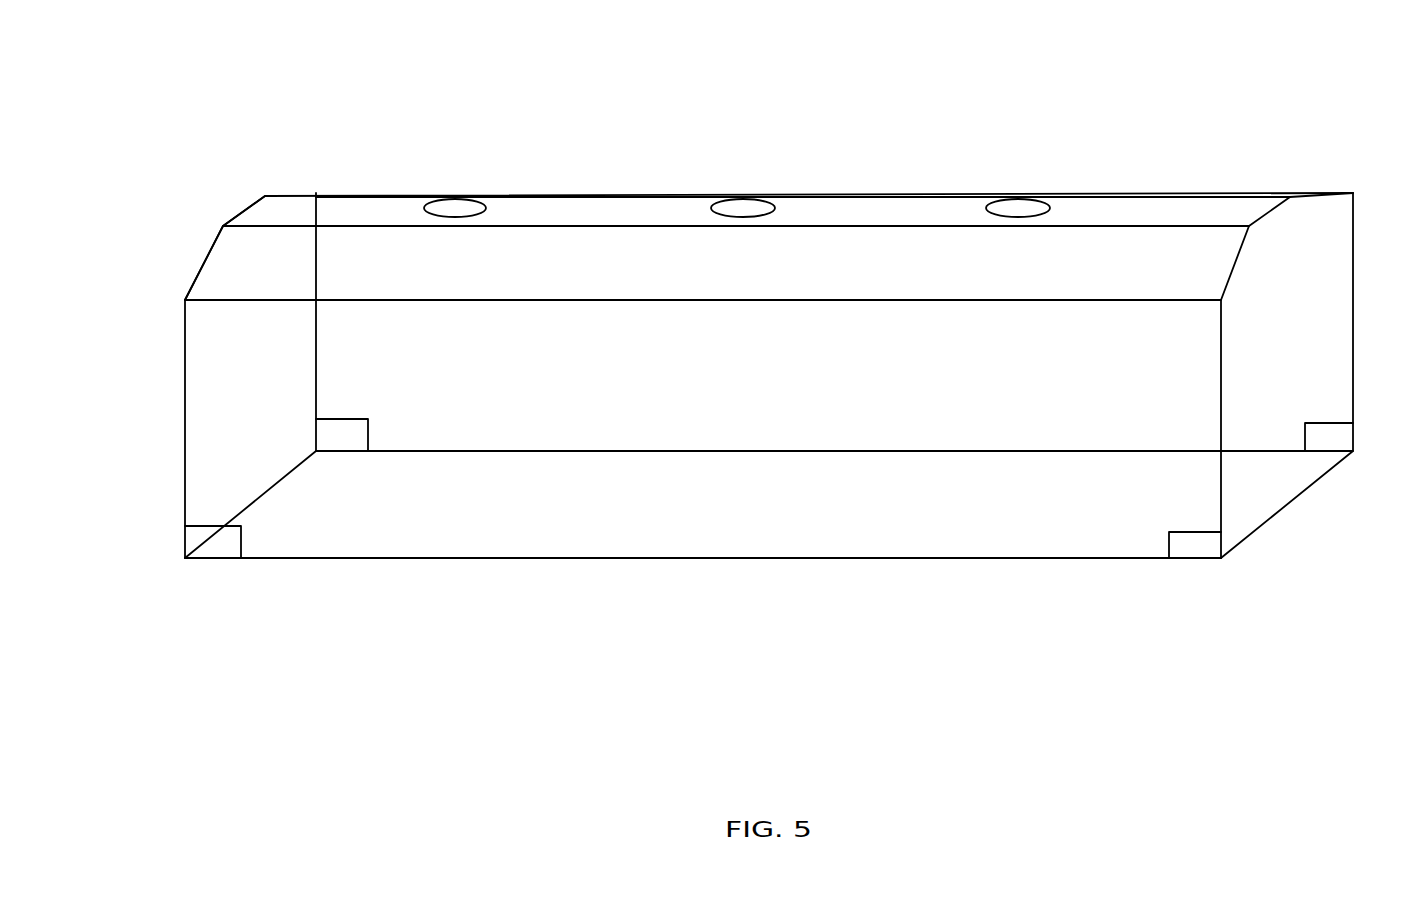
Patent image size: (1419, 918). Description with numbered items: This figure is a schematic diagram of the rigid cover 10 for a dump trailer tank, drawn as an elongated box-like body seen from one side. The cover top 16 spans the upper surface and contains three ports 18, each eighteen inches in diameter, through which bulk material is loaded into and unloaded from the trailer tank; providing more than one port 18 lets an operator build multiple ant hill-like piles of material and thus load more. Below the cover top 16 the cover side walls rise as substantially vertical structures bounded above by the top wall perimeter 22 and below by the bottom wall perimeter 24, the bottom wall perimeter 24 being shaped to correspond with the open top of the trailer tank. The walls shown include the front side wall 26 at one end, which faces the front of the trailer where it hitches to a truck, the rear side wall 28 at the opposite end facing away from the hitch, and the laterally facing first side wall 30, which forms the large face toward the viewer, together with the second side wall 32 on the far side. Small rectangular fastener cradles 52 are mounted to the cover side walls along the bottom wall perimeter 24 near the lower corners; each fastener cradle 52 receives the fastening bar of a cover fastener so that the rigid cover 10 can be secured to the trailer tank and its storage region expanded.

The rigid cover 10 is at (907, 76).
The cover top 16 is at (621, 220).
The ports 18 is at (455, 208).
The top wall perimeter 22 is at (250, 299).
The bottom wall perimeter 24 is at (852, 559).
The front side wall 26 is at (185, 411).
The rear side wall 28 is at (1302, 367).
The first side wall 30 is at (726, 400).
The second side wall 32 is at (1353, 237).
The fastener cradle 52 is at (216, 551).